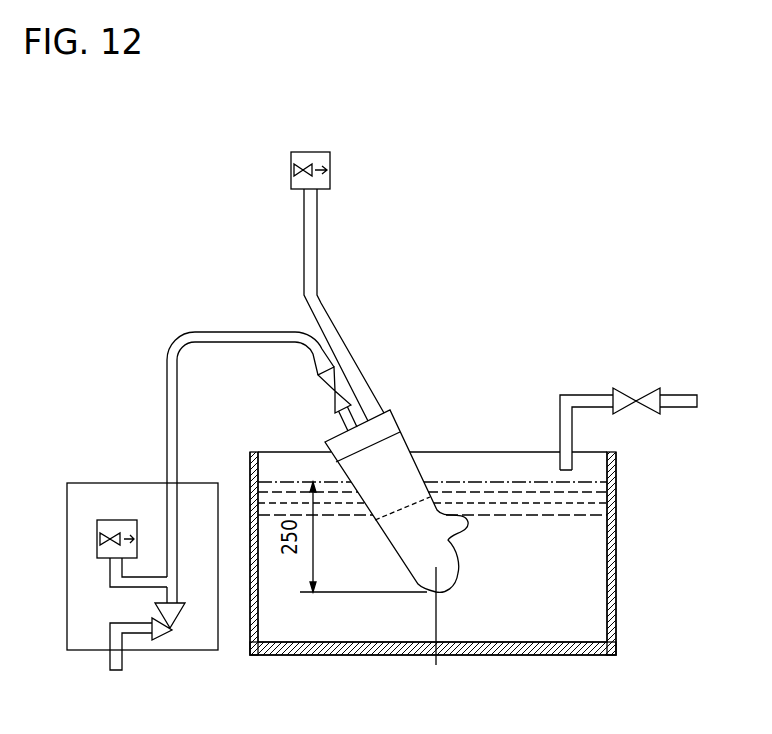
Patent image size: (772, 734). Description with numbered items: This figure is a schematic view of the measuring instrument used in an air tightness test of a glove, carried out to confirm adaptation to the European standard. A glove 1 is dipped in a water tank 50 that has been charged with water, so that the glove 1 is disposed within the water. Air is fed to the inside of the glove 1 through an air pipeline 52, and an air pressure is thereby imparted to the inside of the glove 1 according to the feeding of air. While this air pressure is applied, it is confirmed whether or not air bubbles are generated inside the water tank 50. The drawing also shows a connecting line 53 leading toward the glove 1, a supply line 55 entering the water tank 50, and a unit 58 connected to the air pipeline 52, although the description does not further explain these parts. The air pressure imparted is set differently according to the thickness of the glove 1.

The glove 1 is at (385, 457).
The water tank 50 is at (372, 617).
The air pipeline 52 is at (237, 338).
The hose with connector 53 is at (262, 467).
The inlet pipe with valve 55 is at (653, 429).
The control unit 58 is at (84, 601).